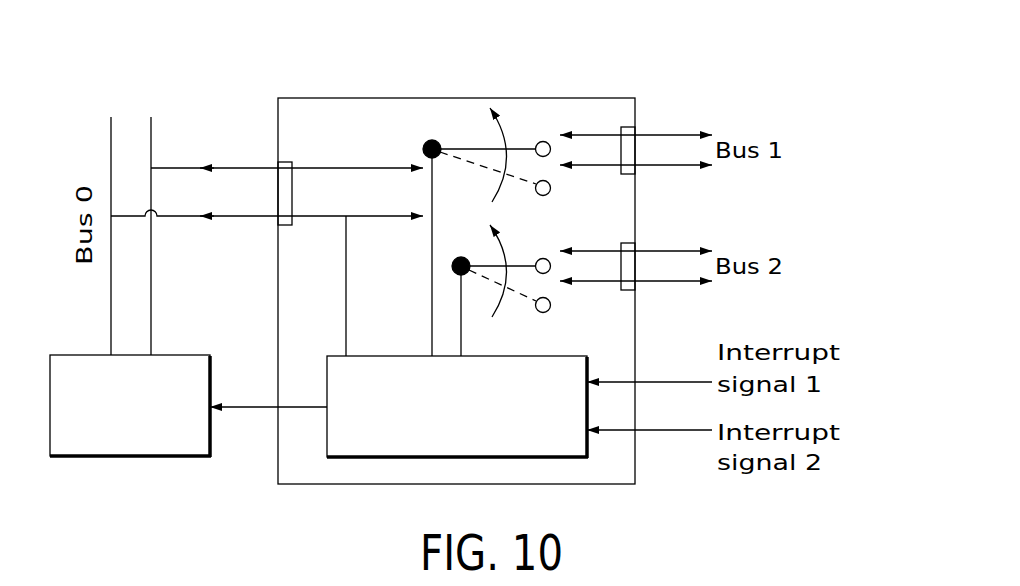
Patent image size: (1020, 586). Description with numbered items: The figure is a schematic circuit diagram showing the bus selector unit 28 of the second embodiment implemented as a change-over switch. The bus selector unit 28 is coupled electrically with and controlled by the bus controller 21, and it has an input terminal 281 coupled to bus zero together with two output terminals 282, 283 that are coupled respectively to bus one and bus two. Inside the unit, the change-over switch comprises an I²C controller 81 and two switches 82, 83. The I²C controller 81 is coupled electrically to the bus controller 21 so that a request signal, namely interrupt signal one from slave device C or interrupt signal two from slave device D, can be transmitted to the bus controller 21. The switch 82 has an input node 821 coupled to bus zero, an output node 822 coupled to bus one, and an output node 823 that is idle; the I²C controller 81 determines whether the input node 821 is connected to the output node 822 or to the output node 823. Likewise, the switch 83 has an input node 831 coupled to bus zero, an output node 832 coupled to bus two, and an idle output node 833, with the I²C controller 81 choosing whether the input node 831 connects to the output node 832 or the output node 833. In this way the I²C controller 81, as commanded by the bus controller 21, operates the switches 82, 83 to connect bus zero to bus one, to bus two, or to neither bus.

The bus controller 21 is at (170, 457).
The bus selector unit 28 is at (290, 97).
The input terminal 281 is at (285, 160).
The output terminal 282 is at (628, 127).
The output terminal 283 is at (630, 290).
The I²C controller 81 is at (400, 355).
The switch 82 is at (520, 193).
The input node 821 is at (425, 141).
The output node 822 is at (541, 141).
The output node 823 is at (551, 188).
The switch 83 is at (529, 276).
The input node 831 is at (461, 257).
The output node 832 is at (545, 258).
The output node 833 is at (551, 306).